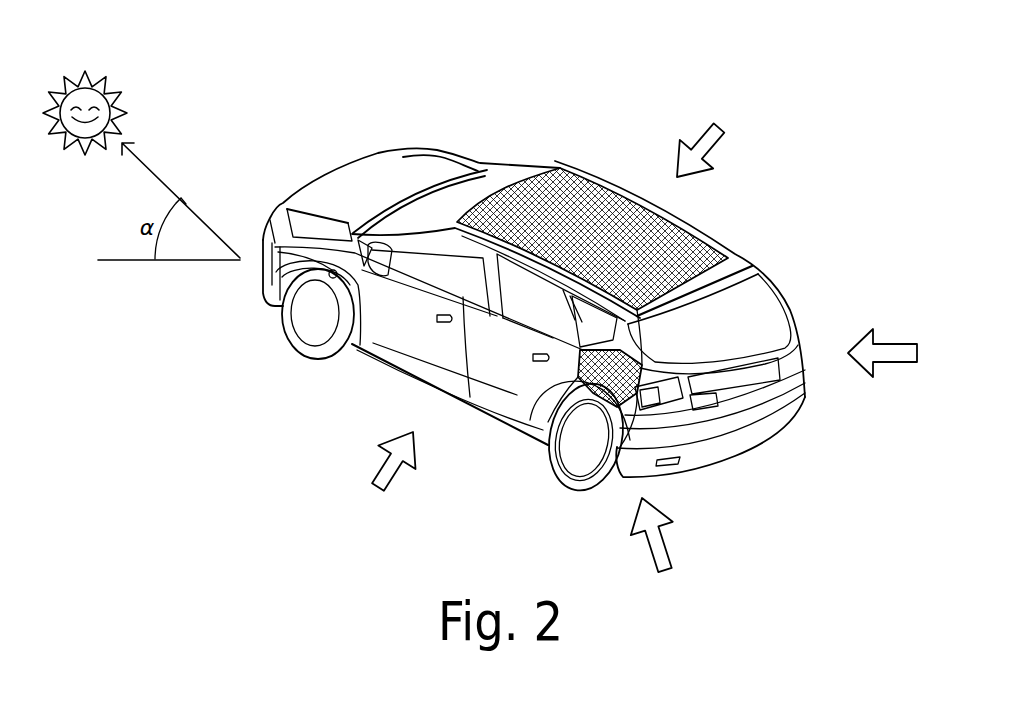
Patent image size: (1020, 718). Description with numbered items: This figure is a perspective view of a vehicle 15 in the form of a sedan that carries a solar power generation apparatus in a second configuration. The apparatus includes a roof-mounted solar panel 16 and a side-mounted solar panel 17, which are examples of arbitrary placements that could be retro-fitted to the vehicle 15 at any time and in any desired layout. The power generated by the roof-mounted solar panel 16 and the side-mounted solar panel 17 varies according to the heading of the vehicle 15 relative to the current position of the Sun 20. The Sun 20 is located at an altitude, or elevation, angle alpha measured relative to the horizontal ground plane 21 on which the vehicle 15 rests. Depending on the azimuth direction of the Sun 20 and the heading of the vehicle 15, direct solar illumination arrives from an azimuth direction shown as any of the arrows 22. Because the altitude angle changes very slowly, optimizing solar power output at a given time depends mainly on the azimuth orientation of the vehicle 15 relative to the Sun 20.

The vehicle 15 is at (534, 276).
The roof-mounted solar panel 16 is at (592, 203).
The side-mounted solar panel 17 is at (608, 380).
The Sun 20 is at (115, 100).
The horizontal ground plane 21 is at (133, 263).
The arrows 22 is at (717, 153).